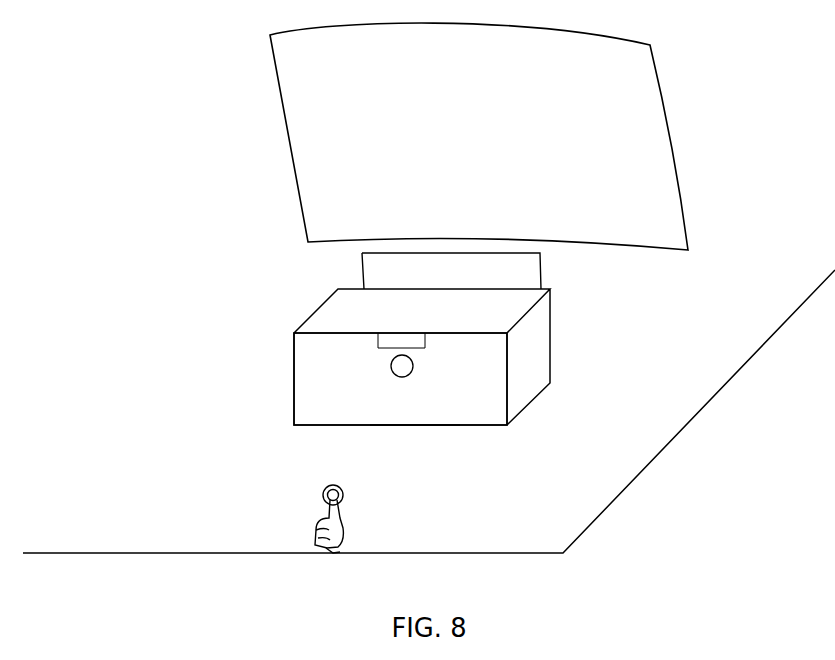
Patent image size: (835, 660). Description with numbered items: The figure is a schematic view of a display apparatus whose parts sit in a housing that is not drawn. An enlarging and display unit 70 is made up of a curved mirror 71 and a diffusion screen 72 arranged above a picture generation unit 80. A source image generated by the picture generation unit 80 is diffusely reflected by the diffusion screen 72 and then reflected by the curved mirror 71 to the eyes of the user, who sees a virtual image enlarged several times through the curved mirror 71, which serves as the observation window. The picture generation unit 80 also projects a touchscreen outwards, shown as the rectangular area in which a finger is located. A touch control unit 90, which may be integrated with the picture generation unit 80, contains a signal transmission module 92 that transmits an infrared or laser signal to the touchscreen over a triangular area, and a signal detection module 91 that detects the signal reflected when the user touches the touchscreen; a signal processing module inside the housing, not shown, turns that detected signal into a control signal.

The enlarging and display unit 70 is at (425, 165).
The curved mirror 71 is at (663, 180).
The diffusion screen 72 is at (530, 277).
The picture generation unit 80 is at (367, 383).
The touch control unit 90 is at (325, 384).
The signal detection module 91 is at (423, 342).
The signal transmission module 92 is at (412, 423).